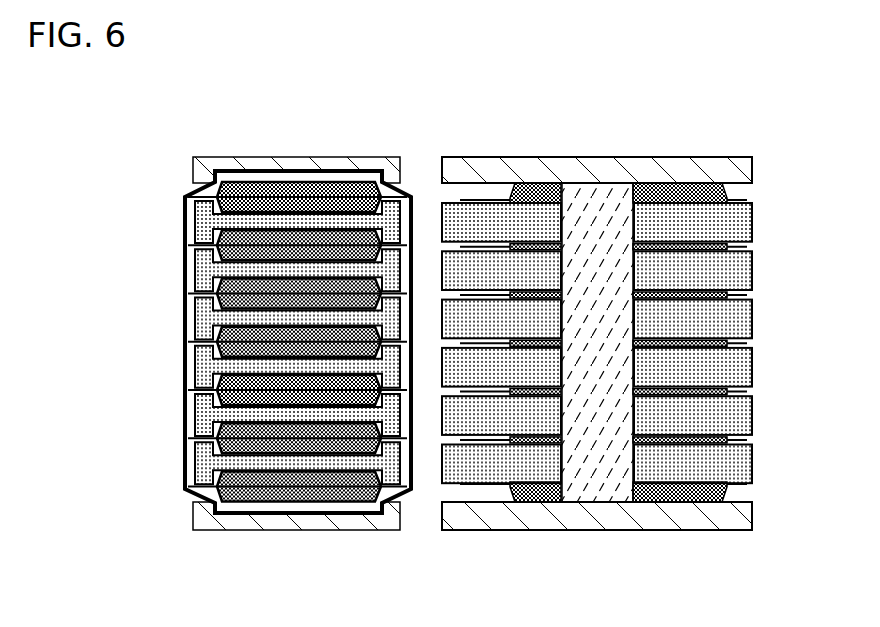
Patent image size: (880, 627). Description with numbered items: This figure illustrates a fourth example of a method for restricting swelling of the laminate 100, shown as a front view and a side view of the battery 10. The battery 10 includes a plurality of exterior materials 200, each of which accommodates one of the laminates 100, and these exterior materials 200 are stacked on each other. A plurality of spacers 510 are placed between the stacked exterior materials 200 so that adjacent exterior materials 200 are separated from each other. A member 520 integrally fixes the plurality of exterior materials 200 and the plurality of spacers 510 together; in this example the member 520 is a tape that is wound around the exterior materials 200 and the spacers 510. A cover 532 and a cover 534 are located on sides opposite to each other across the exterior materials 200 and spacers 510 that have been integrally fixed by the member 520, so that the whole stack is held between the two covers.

The battery 10 is at (790, 98).
The laminate 100 is at (474, 303).
The exterior material 200 is at (332, 190).
The spacer 510 is at (198, 273).
The member 520 is at (185, 328).
The cover 532 is at (237, 157).
The cover 534 is at (252, 522).